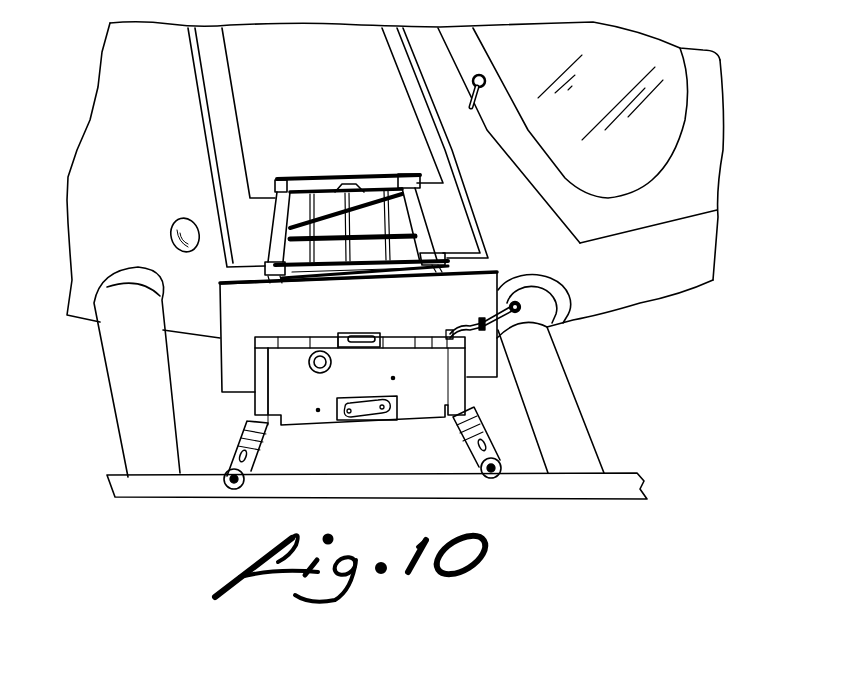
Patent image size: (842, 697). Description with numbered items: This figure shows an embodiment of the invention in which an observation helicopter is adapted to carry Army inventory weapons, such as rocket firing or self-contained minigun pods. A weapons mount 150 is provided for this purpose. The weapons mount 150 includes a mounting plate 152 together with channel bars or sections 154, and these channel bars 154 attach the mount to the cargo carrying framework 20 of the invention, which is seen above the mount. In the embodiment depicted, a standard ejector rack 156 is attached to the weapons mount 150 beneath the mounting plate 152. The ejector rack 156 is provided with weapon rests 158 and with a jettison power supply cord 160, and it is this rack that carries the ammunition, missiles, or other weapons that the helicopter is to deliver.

The cargo carrying framework 20 is at (337, 179).
The weapons mount 150 is at (212, 312).
The mounting plate 152 is at (482, 282).
The channel bars or sections 154 is at (260, 263).
The ejector rack 156 is at (327, 418).
The weapon rests 158 is at (255, 462).
The jettison power supply cord 160 is at (510, 321).